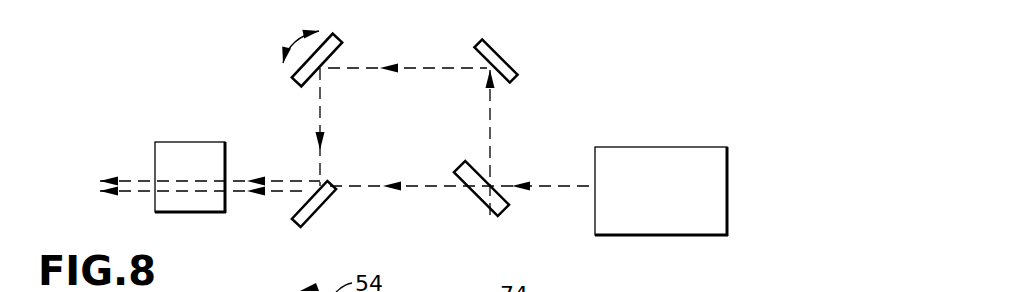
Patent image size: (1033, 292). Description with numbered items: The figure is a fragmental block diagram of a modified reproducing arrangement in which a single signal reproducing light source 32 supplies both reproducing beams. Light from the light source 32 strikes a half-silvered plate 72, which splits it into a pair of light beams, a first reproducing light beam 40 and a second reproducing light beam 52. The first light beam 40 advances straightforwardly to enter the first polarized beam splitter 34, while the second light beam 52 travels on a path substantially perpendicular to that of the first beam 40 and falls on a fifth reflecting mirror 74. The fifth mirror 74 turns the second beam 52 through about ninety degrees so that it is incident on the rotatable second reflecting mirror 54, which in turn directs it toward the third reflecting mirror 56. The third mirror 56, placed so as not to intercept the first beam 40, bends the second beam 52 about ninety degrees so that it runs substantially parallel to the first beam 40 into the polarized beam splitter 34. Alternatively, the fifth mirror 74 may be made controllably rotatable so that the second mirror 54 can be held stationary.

The first reproducing light source 32 is at (728, 147).
The first polarized beam splitter 34 is at (230, 143).
The first reproducing light beam 40 is at (407, 187).
The second reproducing light beam 52 is at (492, 119).
The second reflecting mirror 54 is at (340, 38).
The third reflecting mirror 56 is at (319, 212).
The half-silvered plate 72 is at (484, 208).
The fifth reflecting mirror 74 is at (497, 46).